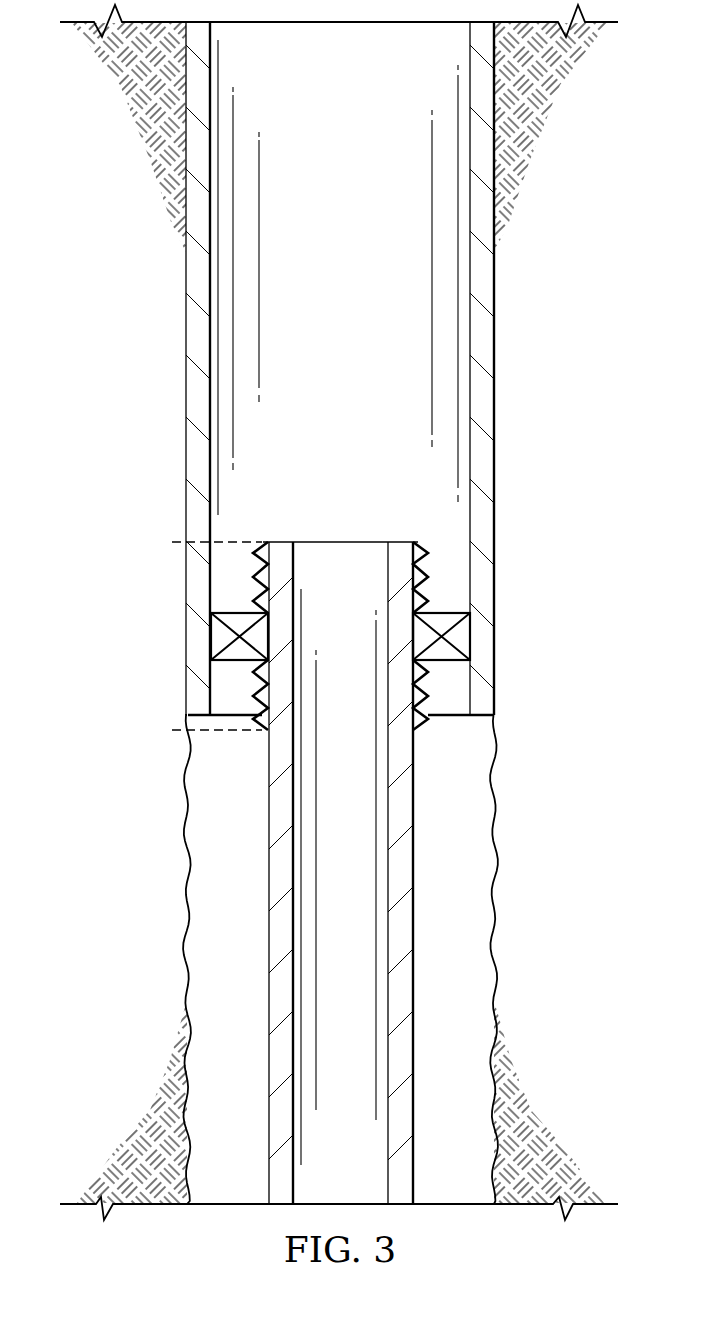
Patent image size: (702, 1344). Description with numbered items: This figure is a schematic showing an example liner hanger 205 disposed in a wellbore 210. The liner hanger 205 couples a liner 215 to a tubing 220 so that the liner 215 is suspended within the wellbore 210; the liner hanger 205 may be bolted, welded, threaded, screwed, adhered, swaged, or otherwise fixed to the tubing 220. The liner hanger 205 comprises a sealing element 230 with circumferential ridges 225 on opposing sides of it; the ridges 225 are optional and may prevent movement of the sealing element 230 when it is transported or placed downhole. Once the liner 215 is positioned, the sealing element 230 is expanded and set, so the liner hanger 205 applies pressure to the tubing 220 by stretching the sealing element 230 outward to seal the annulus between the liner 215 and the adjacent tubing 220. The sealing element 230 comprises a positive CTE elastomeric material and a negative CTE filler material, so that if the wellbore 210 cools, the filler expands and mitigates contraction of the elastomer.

The liner hanger 205 is at (340, 636).
The wellbore 210 is at (490, 842).
The liner 215 is at (282, 873).
The tubing 220 is at (198, 333).
The circumferential ridges 225 is at (430, 591).
The sealing element 230 is at (460, 637).